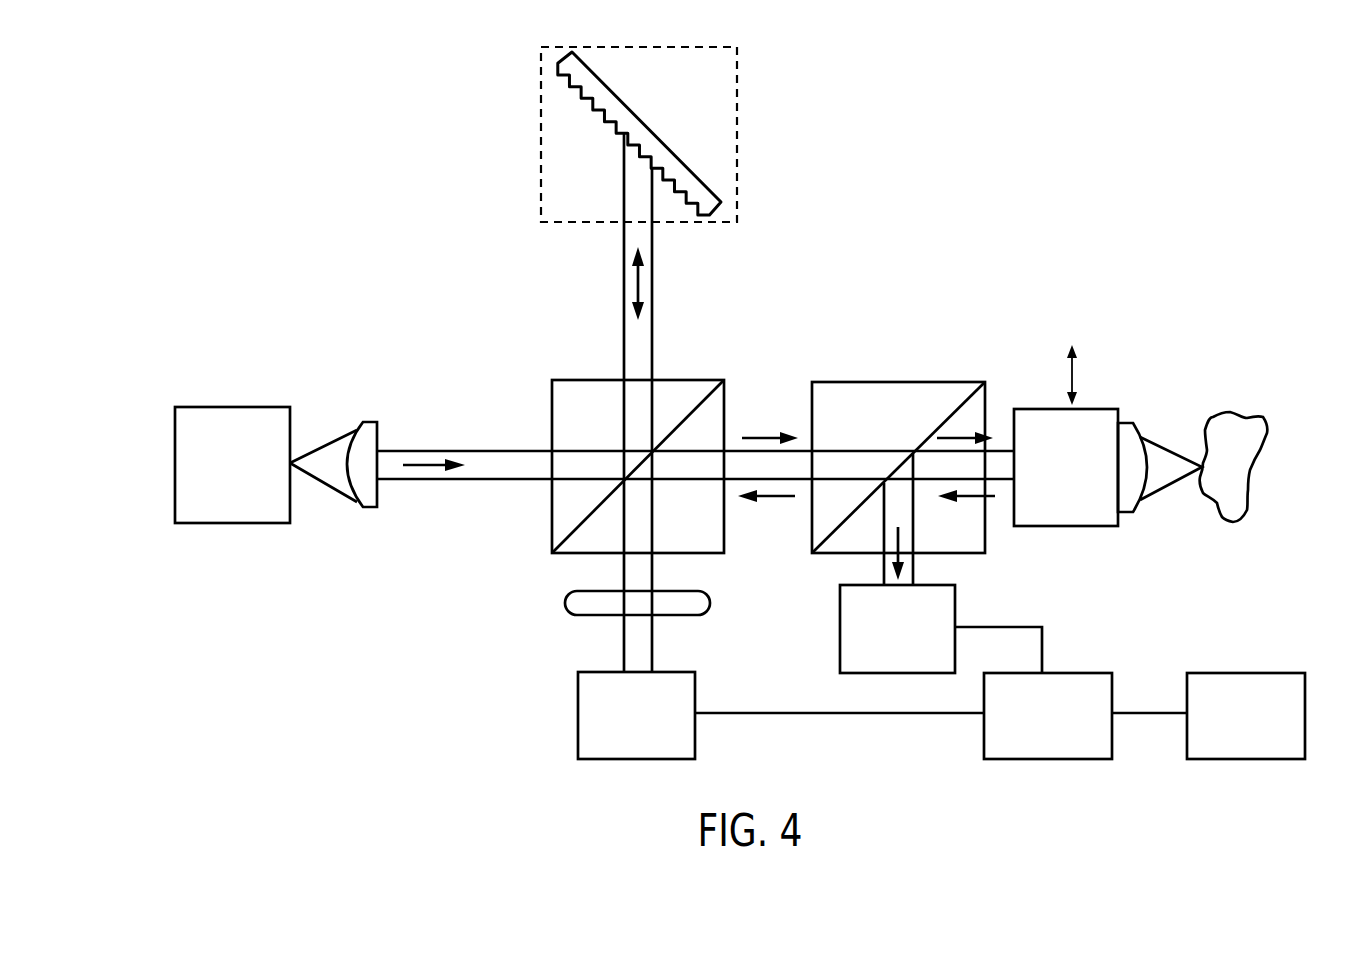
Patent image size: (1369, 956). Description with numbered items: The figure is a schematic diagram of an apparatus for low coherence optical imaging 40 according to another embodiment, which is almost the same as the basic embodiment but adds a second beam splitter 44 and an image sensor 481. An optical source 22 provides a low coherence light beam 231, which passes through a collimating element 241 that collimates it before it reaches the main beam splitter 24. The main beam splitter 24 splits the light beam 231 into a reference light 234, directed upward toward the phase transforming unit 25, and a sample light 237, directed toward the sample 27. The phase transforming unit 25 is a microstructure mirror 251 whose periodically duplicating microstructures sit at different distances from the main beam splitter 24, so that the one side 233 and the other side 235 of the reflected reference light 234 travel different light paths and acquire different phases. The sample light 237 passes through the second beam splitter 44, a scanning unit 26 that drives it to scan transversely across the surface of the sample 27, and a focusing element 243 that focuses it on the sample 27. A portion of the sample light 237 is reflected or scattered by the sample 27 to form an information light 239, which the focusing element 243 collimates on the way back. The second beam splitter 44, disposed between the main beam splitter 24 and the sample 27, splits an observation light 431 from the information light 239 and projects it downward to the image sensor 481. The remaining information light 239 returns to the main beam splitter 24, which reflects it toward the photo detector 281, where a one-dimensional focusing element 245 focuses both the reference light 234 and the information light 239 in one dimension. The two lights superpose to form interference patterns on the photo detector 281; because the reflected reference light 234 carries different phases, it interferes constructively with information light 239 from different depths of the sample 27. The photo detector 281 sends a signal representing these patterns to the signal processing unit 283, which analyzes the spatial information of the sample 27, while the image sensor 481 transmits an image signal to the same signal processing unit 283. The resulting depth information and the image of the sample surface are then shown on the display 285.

The apparatus for low coherence optical imaging 40 is at (261, 173).
The optical source 22 is at (200, 406).
The collimating element 241 is at (362, 421).
The light beam 231 is at (440, 460).
The main beam splitter 24 is at (552, 418).
The one side of the reflected reference light 233 is at (655, 330).
The reference light 234 is at (632, 290).
The other side of the reflected reference light 235 is at (623, 352).
The phase transforming unit 25 is at (620, 134).
The microstructure mirror 251 is at (722, 185).
The one-dimensional focusing element 245 is at (570, 595).
The photo detector 281 is at (578, 692).
The second beam splitter 44 is at (870, 378).
The sample light 237 is at (770, 435).
The information light 239 is at (768, 497).
The observation light 431 is at (900, 542).
The image sensor 481 is at (840, 640).
The signal processing unit 283 is at (1070, 760).
The display 285 is at (1275, 673).
The scanning unit 26 is at (1110, 408).
The focusing element 243 is at (1130, 520).
The sample 27 is at (1262, 408).